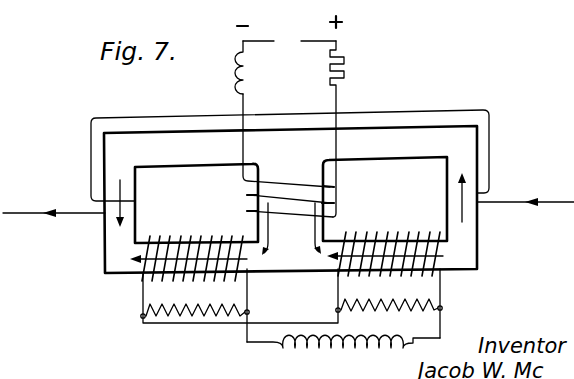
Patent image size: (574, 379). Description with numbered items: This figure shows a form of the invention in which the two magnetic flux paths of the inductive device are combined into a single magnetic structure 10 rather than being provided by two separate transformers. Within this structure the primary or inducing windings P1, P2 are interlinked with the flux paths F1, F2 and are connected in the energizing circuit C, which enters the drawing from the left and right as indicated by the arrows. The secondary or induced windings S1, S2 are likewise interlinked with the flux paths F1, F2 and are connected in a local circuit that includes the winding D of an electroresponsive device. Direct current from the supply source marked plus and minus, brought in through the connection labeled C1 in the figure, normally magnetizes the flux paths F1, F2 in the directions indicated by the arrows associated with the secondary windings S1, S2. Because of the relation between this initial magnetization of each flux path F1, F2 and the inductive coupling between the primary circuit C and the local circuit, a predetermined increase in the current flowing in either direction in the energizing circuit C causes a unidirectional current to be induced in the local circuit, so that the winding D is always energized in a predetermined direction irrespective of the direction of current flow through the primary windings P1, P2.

The source circuit with inductance coil and resistance C1 is at (289, 125).
The primary winding P2 is at (140, 204).
The primary winding P1 is at (446, 198).
The magnetic flux path F2 is at (118, 186).
The magnetic flux path F1 is at (458, 181).
The energizing circuit C is at (543, 202).
The secondary winding S2 is at (184, 240).
The secondary winding S1 is at (380, 230).
The single magnetic structure 10 is at (291, 305).
The winding of electroresponsive device D is at (345, 351).